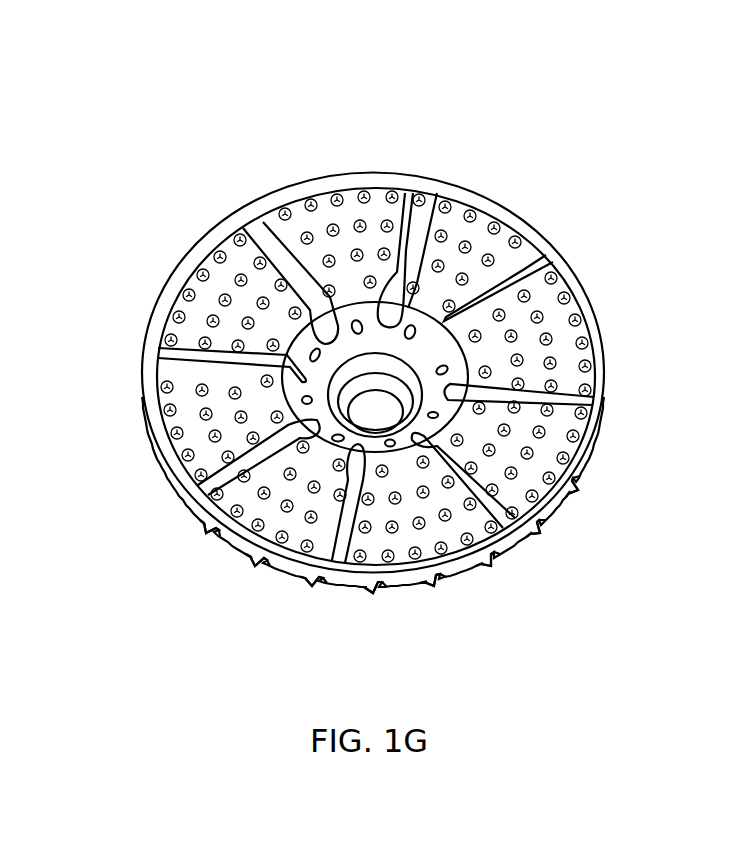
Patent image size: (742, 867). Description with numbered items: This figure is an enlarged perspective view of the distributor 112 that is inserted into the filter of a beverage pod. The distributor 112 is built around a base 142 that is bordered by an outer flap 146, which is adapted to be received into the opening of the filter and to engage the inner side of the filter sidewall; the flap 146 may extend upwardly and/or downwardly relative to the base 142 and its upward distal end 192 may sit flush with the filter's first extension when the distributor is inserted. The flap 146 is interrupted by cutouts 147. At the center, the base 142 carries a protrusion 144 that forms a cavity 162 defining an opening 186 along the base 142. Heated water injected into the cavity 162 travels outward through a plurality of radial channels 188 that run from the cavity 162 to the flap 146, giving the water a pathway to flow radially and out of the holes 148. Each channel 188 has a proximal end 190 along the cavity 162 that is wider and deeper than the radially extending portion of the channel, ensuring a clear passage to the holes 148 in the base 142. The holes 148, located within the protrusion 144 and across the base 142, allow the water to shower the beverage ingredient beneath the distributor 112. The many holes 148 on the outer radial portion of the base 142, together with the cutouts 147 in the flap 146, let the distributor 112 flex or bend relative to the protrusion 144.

The distributor 112 is at (425, 90).
The base 142 is at (558, 350).
The protrusion 144 is at (396, 418).
The outer flap 146 is at (552, 510).
The cutouts 147 is at (254, 565).
The holes 148 is at (312, 352).
The cavity 162 is at (348, 340).
The opening 186 is at (437, 193).
The radial channels 188 is at (523, 270).
The proximal end 190 is at (287, 353).
The distal end 192 is at (600, 383).